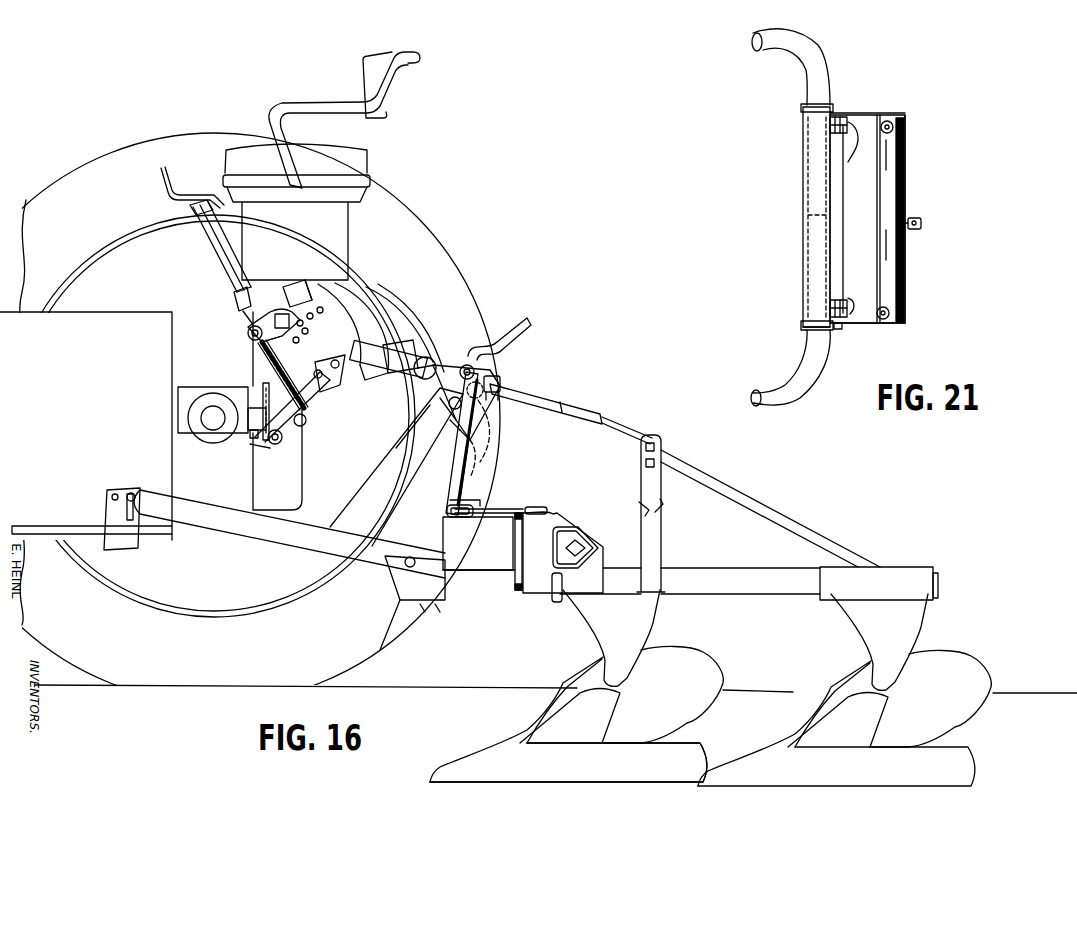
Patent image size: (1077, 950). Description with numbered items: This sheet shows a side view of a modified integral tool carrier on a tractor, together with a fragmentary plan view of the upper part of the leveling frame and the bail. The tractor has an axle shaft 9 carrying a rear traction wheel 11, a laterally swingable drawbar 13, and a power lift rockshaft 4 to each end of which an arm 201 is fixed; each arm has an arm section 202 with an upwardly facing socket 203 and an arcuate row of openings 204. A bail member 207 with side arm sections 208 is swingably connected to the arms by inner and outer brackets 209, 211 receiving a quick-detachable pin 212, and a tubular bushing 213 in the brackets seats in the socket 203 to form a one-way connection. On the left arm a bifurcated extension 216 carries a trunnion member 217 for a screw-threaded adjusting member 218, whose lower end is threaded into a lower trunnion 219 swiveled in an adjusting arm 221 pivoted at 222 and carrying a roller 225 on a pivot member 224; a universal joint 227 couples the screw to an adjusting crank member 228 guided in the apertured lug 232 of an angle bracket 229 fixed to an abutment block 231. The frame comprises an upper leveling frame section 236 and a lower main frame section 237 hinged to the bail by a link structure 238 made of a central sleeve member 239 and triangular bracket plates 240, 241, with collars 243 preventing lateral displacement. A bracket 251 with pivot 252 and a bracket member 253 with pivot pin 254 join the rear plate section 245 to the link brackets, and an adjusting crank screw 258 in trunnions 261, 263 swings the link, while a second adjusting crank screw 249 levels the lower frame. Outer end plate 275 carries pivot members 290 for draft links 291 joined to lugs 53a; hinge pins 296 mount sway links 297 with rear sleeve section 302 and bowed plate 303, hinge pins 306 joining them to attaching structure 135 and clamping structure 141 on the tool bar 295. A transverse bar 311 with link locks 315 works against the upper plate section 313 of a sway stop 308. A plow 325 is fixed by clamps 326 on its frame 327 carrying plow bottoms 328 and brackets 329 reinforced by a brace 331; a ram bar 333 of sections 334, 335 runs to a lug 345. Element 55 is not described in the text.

In FIG. 16, the power lift rockshaft 4 is at (278, 315).
In FIG. 16, the axle shaft 9 is at (208, 417).
In FIG. 16, the rear traction wheel 11 is at (70, 163).
In FIG. 16, the drawbar 13 is at (36, 534).
In FIG. 16, the lugs 53a is at (133, 546).
In FIG. 16, the pivot pin 55 is at (130, 492).
In FIG. 16, the attaching structure 135 is at (547, 599).
In FIG. 16, the clamping structure 141 is at (580, 510).
In FIG. 16, the arm 201 is at (301, 279).
In FIG. 16, the arm section 202 is at (352, 295).
In FIG. 16, the socket 203 is at (385, 342).
In FIG. 16, the openings 204 is at (318, 292).
In FIG. 16, the bail member 207 is at (400, 356).
In FIG. 21, the bail member 207 is at (833, 368).
In FIG. 16, the bail side arm section 208 is at (408, 368).
In FIG. 21, the bail side arm section 208 is at (797, 65).
In FIG. 16, the inner bracket 209 is at (375, 328).
In FIG. 16, the outer bracket 211 is at (412, 345).
In FIG. 16, the quick-detachable pin 212 is at (312, 390).
In FIG. 16, the tubular bushing 213 is at (320, 375).
In FIG. 16, the bifurcated extension 216 is at (248, 334).
In FIG. 16, the trunnion member 217 is at (258, 343).
In FIG. 16, the screw-threaded adjusting member 218 is at (263, 374).
In FIG. 16, the lower trunnion 219 is at (306, 426).
In FIG. 16, the adjusting arm 221 is at (294, 441).
In FIG. 16, the pivot 222 is at (322, 333).
In FIG. 16, the pivot member 224 is at (280, 445).
In FIG. 16, the roller 225 is at (264, 446).
In FIG. 16, the universal joint 227 is at (236, 308).
In FIG. 16, the adjusting crank member 228 is at (185, 192).
In FIG. 16, the angle bracket 229 is at (216, 262).
In FIG. 16, the abutment block 231 is at (182, 403).
In FIG. 16, the apertured lug 232 is at (192, 210).
In FIG. 16, the upper leveling frame section 236 is at (484, 434).
In FIG. 21, the upper leveling frame section 236 is at (915, 297).
In FIG. 16, the lower main frame section 237 is at (468, 476).
In FIG. 16, the link structure 238 is at (477, 354).
In FIG. 21, the link structure 238 is at (870, 102).
In FIG. 16, the central sleeve member 239 is at (449, 355).
In FIG. 21, the central sleeve member 239 is at (812, 181).
In FIG. 21, the bracket plates 240 is at (855, 148).
In FIG. 16, the bracket plates 241 is at (440, 398).
In FIG. 21, the bracket plates 241 is at (851, 300).
In FIG. 21, the collars 243 is at (800, 108).
In FIG. 21, the rear plate section 245 is at (905, 277).
In FIG. 21, the adjusting crank screw 249 is at (895, 127).
In FIG. 21, the bracket 251 is at (872, 113).
In FIG. 21, the pivot 252 is at (838, 115).
In FIG. 16, the bracket member 253 is at (465, 440).
In FIG. 21, the bracket member 253 is at (860, 325).
In FIG. 16, the pivot pin 254 is at (450, 420).
In FIG. 21, the pivot pin 254 is at (838, 330).
In FIG. 16, the adjusting crank screw 258 is at (522, 327).
In FIG. 21, the adjusting crank screw 258 is at (895, 316).
In FIG. 16, the trunnion 261 is at (476, 371).
In FIG. 16, the lower trunnion 263 is at (480, 459).
In FIG. 16, the outer end plate 275 is at (430, 494).
In FIG. 16, the pivot members 290 is at (406, 571).
In FIG. 16, the draft links 291 is at (270, 542).
In FIG. 16, the tool bar 295 is at (584, 536).
In FIG. 16, the hinge pins 296 is at (432, 600).
In FIG. 16, the sway links 297 is at (492, 587).
In FIG. 16, the rear sleeve section 302 is at (518, 575).
In FIG. 16, the bowed plate 303 is at (465, 570).
In FIG. 16, the hinge pins 306 is at (530, 513).
In FIG. 16, the sway stop 308 is at (472, 504).
In FIG. 16, the transverse bar 311 is at (510, 516).
In FIG. 16, the upper plate section 313 is at (402, 488).
In FIG. 16, the link locks 315 is at (460, 520).
In FIG. 16, the plow 325 is at (765, 610).
In FIG. 16, the clamps 326 is at (594, 605).
In FIG. 16, the frame 327 is at (716, 573).
In FIG. 16, the plow bottoms 328 is at (708, 760).
In FIG. 16, the brackets 329 is at (664, 515).
In FIG. 16, the brace 331 is at (766, 505).
In FIG. 16, the ram bar 333 is at (604, 415).
In FIG. 16, the ram bar section 334 is at (560, 409).
In FIG. 16, the ram bar section 335 is at (632, 431).
In FIG. 16, the lug 345 is at (494, 394).
In FIG. 21, the lug 345 is at (922, 220).